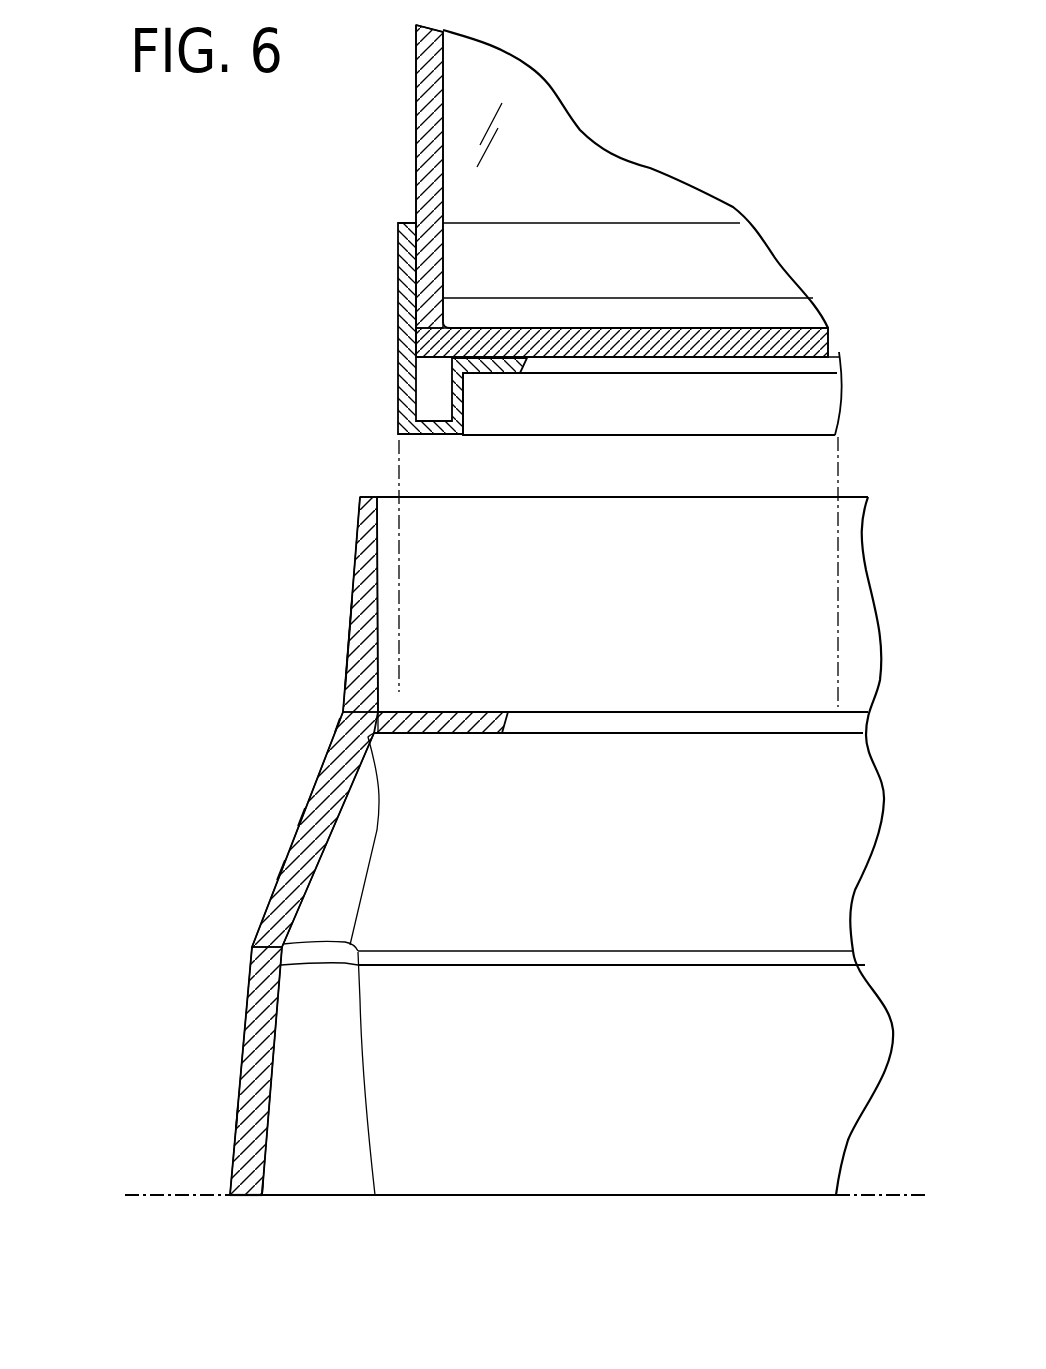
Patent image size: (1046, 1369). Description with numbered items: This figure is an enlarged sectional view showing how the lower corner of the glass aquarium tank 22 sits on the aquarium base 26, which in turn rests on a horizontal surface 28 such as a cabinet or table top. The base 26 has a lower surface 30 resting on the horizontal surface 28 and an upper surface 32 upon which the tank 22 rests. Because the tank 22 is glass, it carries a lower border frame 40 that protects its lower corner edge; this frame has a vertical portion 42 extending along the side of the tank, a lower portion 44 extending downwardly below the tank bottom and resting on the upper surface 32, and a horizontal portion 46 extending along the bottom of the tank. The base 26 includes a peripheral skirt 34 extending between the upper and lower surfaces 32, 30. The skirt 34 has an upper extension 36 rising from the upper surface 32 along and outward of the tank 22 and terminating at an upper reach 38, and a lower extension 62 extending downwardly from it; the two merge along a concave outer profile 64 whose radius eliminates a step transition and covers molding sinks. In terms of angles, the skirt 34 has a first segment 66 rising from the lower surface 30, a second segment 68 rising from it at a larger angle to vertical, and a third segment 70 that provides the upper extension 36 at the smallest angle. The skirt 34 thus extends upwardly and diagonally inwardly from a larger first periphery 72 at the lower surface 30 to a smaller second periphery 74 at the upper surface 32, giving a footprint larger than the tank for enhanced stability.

The aquarium tank 22 is at (416, 72).
The base 26 is at (249, 948).
The horizontal surface 28 is at (148, 1195).
The lower surface 30 is at (245, 1196).
The upper surface 32 is at (418, 712).
The peripheral skirt 34 is at (321, 777).
The upper extension 36 is at (352, 560).
The upper reach 38 is at (367, 496).
The lower border frame 40 is at (398, 362).
The vertical portion 42 is at (398, 262).
The lower portion 44 is at (430, 436).
The horizontal portion 46 is at (503, 376).
The lower extension 62 is at (301, 830).
The concave outer profile 64 is at (343, 722).
The first segment 66 is at (236, 1125).
The second segment 68 is at (282, 884).
The third segment 70 is at (348, 650).
The first periphery 72 is at (257, 1192).
The second periphery 74 is at (372, 740).